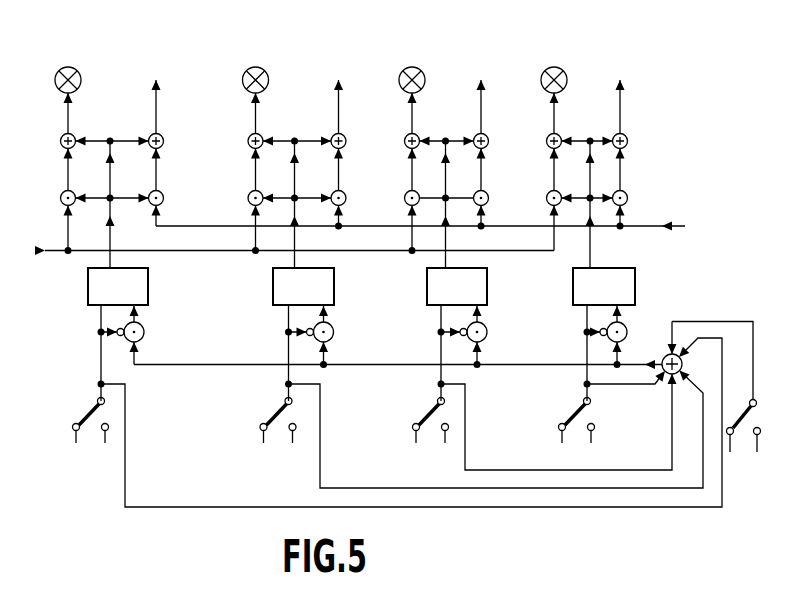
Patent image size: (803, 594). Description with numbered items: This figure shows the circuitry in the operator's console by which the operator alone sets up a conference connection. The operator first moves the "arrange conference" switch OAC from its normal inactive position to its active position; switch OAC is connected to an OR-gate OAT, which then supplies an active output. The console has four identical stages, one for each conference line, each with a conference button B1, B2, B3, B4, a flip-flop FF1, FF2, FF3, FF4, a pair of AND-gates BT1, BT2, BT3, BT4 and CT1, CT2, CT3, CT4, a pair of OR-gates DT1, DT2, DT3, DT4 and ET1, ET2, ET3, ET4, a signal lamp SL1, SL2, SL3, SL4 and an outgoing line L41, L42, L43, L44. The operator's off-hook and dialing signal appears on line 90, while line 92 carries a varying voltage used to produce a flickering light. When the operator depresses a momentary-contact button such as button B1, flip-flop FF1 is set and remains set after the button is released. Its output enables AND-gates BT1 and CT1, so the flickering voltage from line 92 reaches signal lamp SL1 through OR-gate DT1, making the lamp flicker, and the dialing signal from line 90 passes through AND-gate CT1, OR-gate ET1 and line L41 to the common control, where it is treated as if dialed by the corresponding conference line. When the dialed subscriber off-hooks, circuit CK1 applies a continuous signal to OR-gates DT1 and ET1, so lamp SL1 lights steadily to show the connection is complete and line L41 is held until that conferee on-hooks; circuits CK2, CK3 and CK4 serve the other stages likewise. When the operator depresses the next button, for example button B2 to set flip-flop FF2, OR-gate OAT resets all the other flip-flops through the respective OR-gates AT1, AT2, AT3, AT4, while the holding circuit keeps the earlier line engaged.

The line 90 is at (648, 227).
The line 92 is at (50, 252).
The signal lamp SL1 is at (68, 70).
The signal lamp SL2 is at (256, 70).
The signal lamp SL3 is at (412, 70).
The signal lamp SL4 is at (554, 70).
The line L41 is at (156, 95).
The line L42 is at (339, 95).
The line L43 is at (481, 95).
The line L44 is at (620, 95).
The OR-gate DT1 is at (54, 142).
The OR-gate DT2 is at (241, 142).
The OR-gate DT3 is at (398, 142).
The OR-gate DT4 is at (540, 142).
The OR-gate ET1 is at (170, 142).
The OR-gate ET2 is at (352, 142).
The OR-gate ET3 is at (495, 142).
The OR-gate ET4 is at (634, 142).
The AND-gate BT1 is at (54, 199).
The AND-gate BT2 is at (241, 199).
The AND-gate BT3 is at (398, 199).
The AND-gate BT4 is at (540, 199).
The AND-gate CT1 is at (170, 199).
The AND-gate CT2 is at (352, 199).
The AND-gate CT3 is at (495, 199).
The AND-gate CT4 is at (634, 199).
The circuit CK1 is at (110, 203).
The circuit CK2 is at (295, 203).
The circuit CK3 is at (446, 203).
The circuit CK4 is at (590, 203).
The flip-flop FF1 is at (132, 286).
The flip-flop FF2 is at (317, 286).
The flip-flop FF3 is at (471, 286).
The flip-flop FF4 is at (618, 286).
The OR-gate AT1 is at (144, 332).
The OR-gate AT2 is at (334, 332).
The OR-gate AT3 is at (487, 332).
The OR-gate AT4 is at (627, 332).
The conference line button B1 is at (89, 441).
The conference button B2 is at (276, 441).
The conference button B3 is at (429, 441).
The conference button B4 is at (582, 434).
The OR-gate OAT is at (408, 363).
The arrange conference switch OAC is at (716, 407).